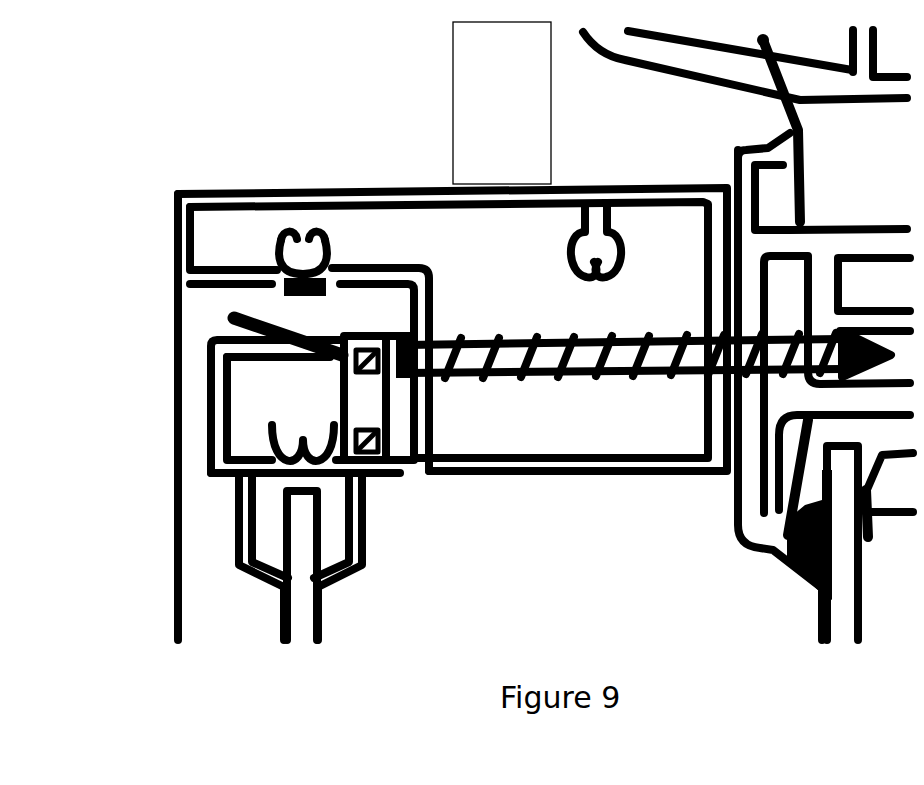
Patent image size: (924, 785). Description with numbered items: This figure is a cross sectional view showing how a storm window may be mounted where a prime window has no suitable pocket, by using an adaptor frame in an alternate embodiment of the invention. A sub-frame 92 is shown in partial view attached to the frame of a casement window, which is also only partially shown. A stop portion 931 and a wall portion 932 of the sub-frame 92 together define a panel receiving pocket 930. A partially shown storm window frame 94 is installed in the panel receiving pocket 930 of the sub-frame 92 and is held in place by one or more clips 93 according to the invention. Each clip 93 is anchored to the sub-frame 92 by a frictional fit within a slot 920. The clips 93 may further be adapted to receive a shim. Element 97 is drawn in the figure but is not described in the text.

The sub-frame 92 is at (577, 477).
The slot 920 is at (282, 285).
The clip 93 is at (319, 336).
The panel receiving pocket 930 is at (197, 335).
The stop portion 931 is at (433, 418).
The wall portion 932 is at (222, 292).
The storm window frame 94 is at (388, 478).
The screw 97 is at (561, 339).